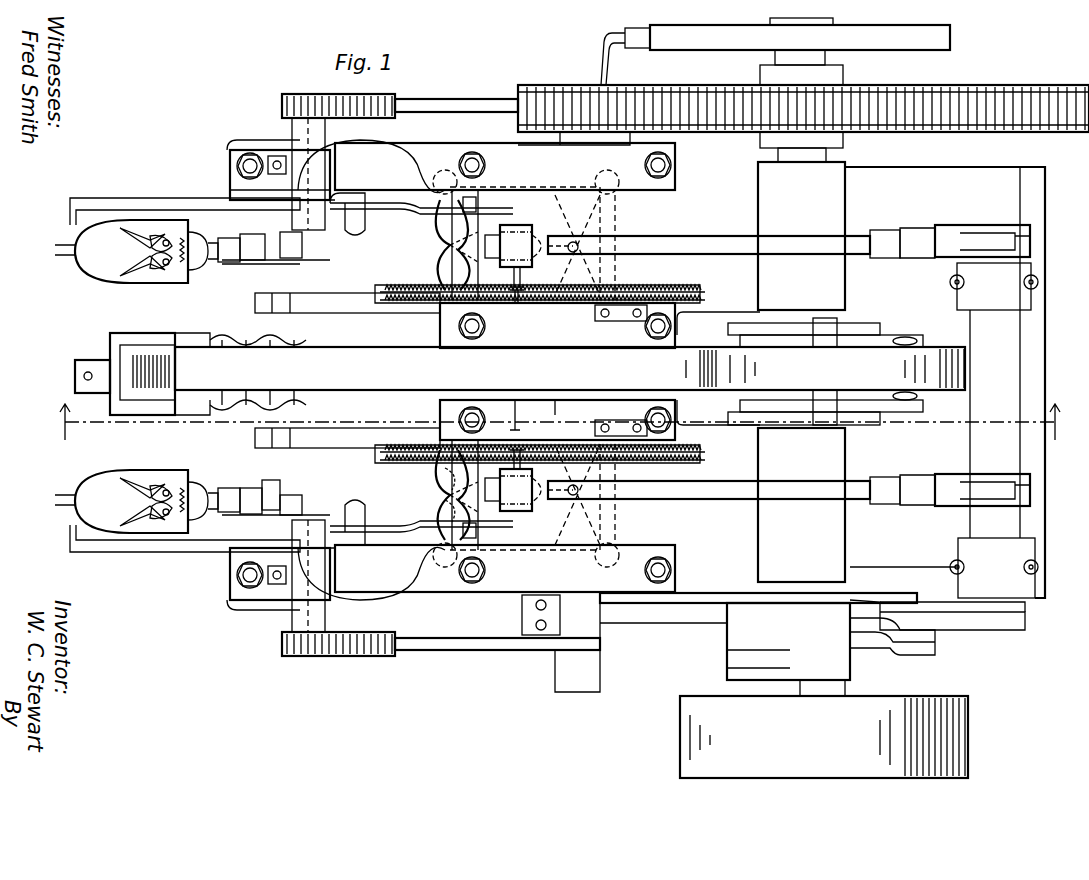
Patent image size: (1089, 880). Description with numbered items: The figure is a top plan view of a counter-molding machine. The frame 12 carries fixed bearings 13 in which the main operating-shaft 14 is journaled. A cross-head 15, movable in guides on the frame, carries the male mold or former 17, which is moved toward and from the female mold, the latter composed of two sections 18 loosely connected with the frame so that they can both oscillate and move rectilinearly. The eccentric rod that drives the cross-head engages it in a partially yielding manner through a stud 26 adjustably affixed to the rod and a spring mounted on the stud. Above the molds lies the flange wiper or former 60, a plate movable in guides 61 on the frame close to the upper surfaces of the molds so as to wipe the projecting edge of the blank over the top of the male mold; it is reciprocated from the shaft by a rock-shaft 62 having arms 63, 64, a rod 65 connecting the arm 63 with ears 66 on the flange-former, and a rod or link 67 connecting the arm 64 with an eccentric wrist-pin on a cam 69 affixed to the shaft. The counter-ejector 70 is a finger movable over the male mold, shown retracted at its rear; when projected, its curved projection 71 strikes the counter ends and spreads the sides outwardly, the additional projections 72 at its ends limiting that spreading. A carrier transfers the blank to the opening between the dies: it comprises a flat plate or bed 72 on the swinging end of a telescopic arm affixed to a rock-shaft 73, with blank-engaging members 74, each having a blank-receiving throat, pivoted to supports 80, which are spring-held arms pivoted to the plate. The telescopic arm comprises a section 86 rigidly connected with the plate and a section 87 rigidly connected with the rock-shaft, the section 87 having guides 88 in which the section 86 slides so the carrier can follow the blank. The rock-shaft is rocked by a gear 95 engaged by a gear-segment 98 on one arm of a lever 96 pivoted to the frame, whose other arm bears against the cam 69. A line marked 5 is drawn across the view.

The section line 5- 5 is at (554, 423).
The frame 12 is at (950, 178).
The fixed bearings 13 is at (801, 372).
The main operating-shaft 14 is at (830, 152).
The cross-head 15 is at (320, 322).
The male mold or former 17 is at (440, 240).
The female mold sections 18 is at (465, 240).
The stud 26 is at (75, 370).
The flange wiper or former 60 is at (480, 300).
The guides 61 is at (425, 160).
The rock-shaft 62 is at (1010, 455).
The arm 63 is at (985, 230).
The arm 64 is at (978, 620).
The rod 65 is at (735, 222).
The ears 66 is at (528, 528).
The rod or link 67 is at (862, 655).
The cam 69 is at (740, 605).
The counter-ejector 70 is at (430, 488).
The curved projection 71 is at (430, 508).
The plate or bed 72 is at (80, 268).
The rock-shaft 73 is at (312, 658).
The blank-engaging members 74 is at (125, 380).
The supports 80 is at (158, 222).
The arm section 86 is at (268, 480).
The arm section 87 is at (240, 210).
The guides 88 is at (232, 287).
The gear 95 is at (282, 103).
The lever 96 is at (695, 612).
The gear-segment 98 is at (360, 97).